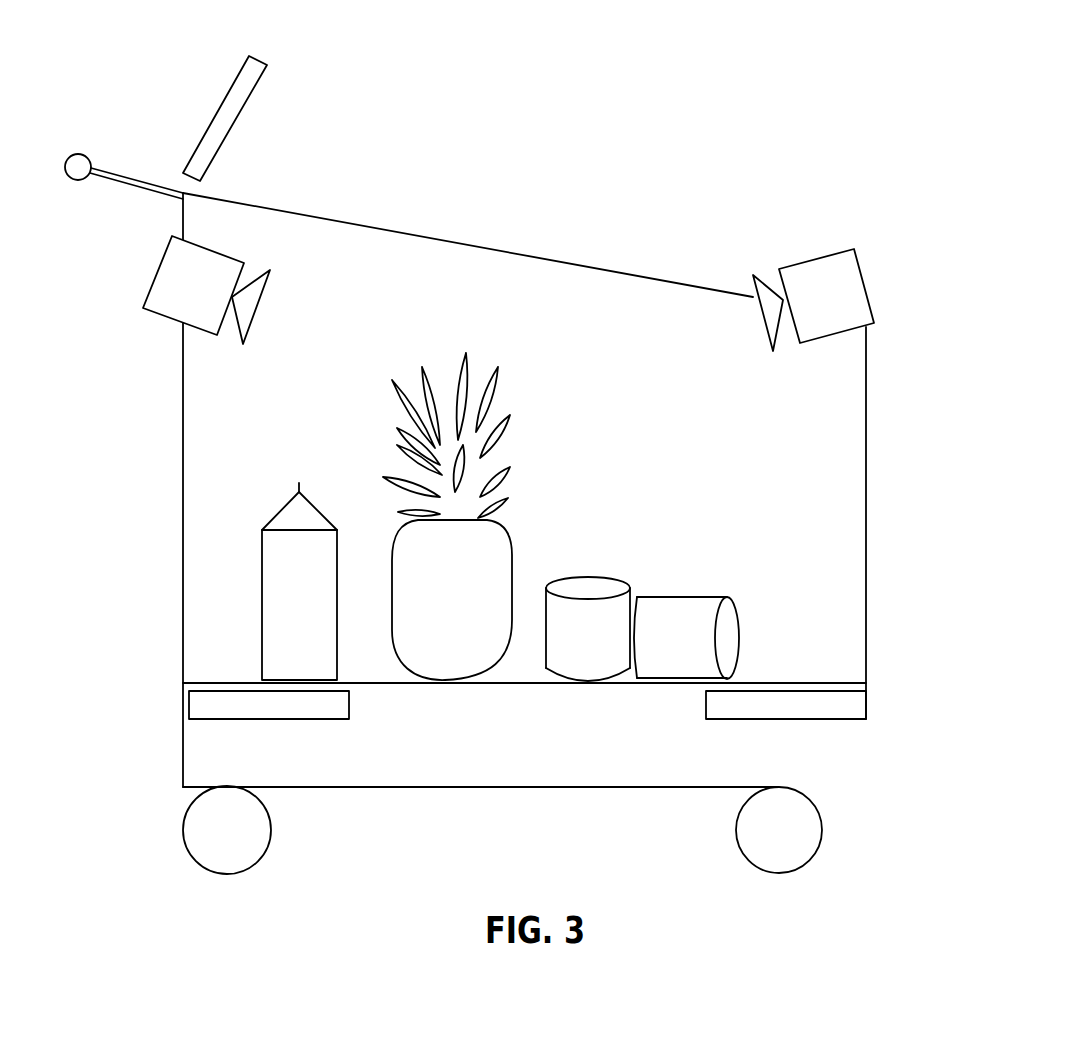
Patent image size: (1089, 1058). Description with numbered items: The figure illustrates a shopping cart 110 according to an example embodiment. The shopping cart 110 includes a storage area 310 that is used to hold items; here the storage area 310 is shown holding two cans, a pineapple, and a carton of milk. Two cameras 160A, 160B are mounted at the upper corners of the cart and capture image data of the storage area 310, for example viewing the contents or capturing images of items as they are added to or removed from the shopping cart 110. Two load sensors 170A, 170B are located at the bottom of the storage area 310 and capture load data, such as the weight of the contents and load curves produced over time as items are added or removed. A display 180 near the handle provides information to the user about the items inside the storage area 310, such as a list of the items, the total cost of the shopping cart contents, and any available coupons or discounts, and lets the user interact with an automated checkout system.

The shopping cart 110 is at (613, 322).
The display 180 is at (230, 120).
The camera 160A is at (221, 299).
The camera 160B is at (857, 312).
The load sensor 170A is at (298, 717).
The load sensor 170B is at (814, 717).
The storage area 310 is at (876, 537).